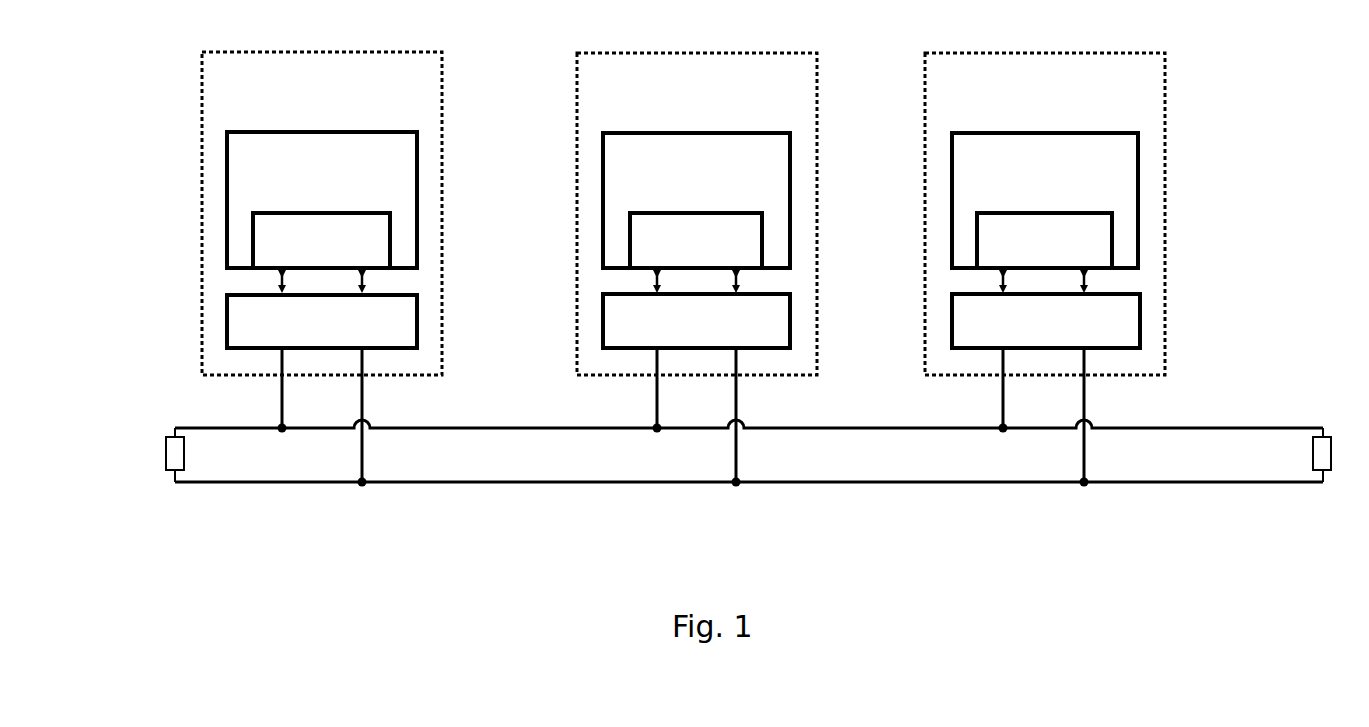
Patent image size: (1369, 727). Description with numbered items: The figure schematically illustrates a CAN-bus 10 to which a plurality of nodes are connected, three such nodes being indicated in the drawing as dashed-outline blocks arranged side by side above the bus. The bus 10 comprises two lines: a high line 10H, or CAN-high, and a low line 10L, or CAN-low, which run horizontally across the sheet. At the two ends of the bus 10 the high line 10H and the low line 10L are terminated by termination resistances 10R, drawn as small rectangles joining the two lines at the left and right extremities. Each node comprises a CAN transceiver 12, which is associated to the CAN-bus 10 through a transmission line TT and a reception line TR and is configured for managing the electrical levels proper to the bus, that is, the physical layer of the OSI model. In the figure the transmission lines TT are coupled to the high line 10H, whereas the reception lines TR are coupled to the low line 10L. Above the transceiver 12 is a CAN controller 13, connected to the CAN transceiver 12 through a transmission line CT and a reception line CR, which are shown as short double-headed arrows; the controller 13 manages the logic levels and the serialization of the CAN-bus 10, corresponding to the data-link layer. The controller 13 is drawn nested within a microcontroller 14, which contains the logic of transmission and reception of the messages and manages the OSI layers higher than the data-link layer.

The CAN-bus 10 is at (736, 442).
The high line 10H is at (749, 412).
The low line 10L is at (749, 500).
The termination resistance 10R is at (160, 400).
The CAN transceiver 12 is at (405, 330).
The CAN controller 13 is at (393, 250).
The microcontroller 14 is at (418, 192).
The transmission line TT is at (257, 390).
The reception line TR is at (386, 417).
The transmission line CT is at (259, 280).
The reception line CR is at (388, 280).